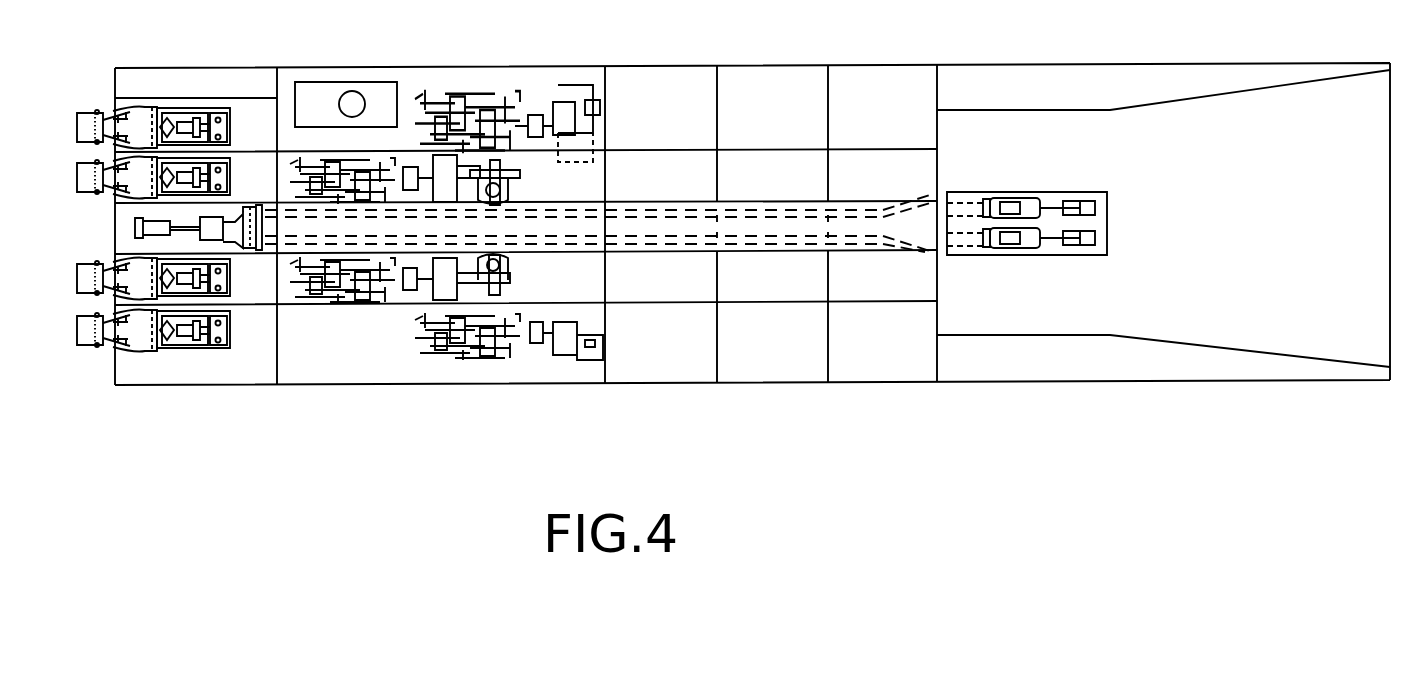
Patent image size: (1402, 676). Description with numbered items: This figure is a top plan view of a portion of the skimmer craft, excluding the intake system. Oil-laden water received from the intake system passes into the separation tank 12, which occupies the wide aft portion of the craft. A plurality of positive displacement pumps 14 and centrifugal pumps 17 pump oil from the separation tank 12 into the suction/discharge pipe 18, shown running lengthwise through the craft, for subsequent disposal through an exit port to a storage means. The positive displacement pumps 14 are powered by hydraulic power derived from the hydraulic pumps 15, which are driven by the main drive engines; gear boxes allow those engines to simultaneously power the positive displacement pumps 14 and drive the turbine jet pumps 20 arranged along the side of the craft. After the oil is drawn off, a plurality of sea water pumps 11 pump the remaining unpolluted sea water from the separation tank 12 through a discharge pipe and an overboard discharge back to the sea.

The sea water pumps 11 is at (556, 151).
The separation tank 12 is at (1259, 205).
The positive displacement pumps 14 is at (1036, 197).
The hydraulic pumps 15 is at (587, 115).
The centrifugal pumps 17 is at (240, 250).
The suction/discharge pipe 18 is at (874, 226).
The turbine jet pumps 20 is at (92, 183).